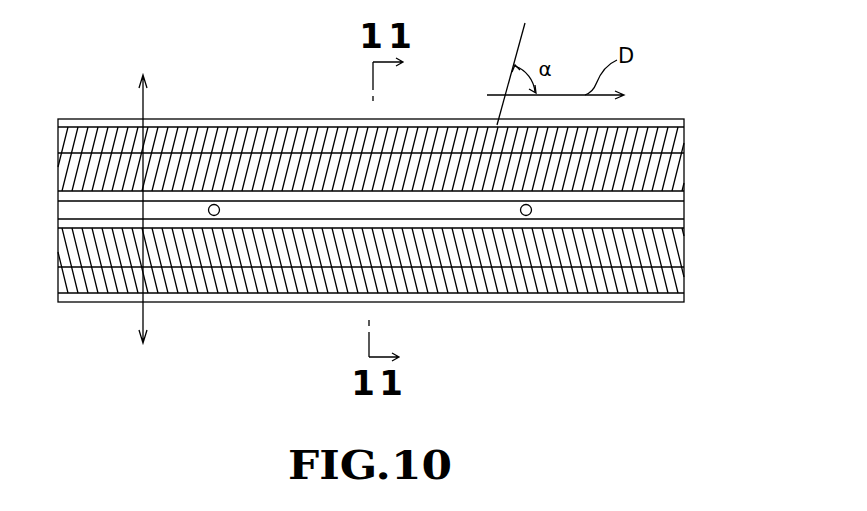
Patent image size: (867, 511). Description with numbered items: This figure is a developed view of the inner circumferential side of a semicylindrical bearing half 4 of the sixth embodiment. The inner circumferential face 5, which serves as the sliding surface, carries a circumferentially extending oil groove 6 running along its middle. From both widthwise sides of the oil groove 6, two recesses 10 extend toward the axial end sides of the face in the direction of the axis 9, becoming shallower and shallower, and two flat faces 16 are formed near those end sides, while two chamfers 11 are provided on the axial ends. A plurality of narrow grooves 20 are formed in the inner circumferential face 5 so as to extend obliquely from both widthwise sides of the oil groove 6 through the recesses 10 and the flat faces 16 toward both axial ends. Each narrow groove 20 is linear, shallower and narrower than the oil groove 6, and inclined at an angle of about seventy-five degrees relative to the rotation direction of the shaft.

The bearing half 4 is at (305, 120).
The inner circumferential face 5 is at (254, 128).
The oil groove 6 is at (665, 210).
The axis 9 is at (140, 312).
The recess 10 is at (668, 178).
The chamfer 11 is at (197, 127).
The flat face 16 is at (648, 137).
The narrow groove 20 is at (440, 137).